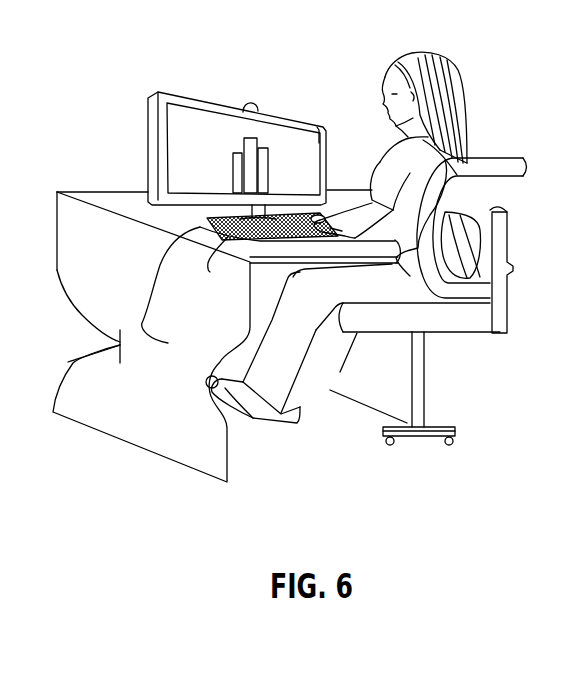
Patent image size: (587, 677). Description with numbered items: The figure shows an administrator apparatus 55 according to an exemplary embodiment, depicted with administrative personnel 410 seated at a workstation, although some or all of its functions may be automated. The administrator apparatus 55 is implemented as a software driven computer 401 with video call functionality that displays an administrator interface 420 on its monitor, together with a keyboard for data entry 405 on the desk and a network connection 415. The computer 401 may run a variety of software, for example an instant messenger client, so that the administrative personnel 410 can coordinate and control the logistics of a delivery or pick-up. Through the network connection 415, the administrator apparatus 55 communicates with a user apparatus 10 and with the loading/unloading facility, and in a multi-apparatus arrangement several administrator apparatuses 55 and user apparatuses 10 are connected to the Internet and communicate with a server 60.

The administrator apparatus 55 is at (103, 73).
The user apparatus 10 is at (80, 359).
The server 60 is at (88, 318).
The software driven computer 401 is at (284, 120).
The keyboard for data entry 405 is at (226, 336).
The administrative personnel 410 is at (460, 80).
The network connection 415 is at (236, 395).
The administrator interface 420 is at (187, 122).